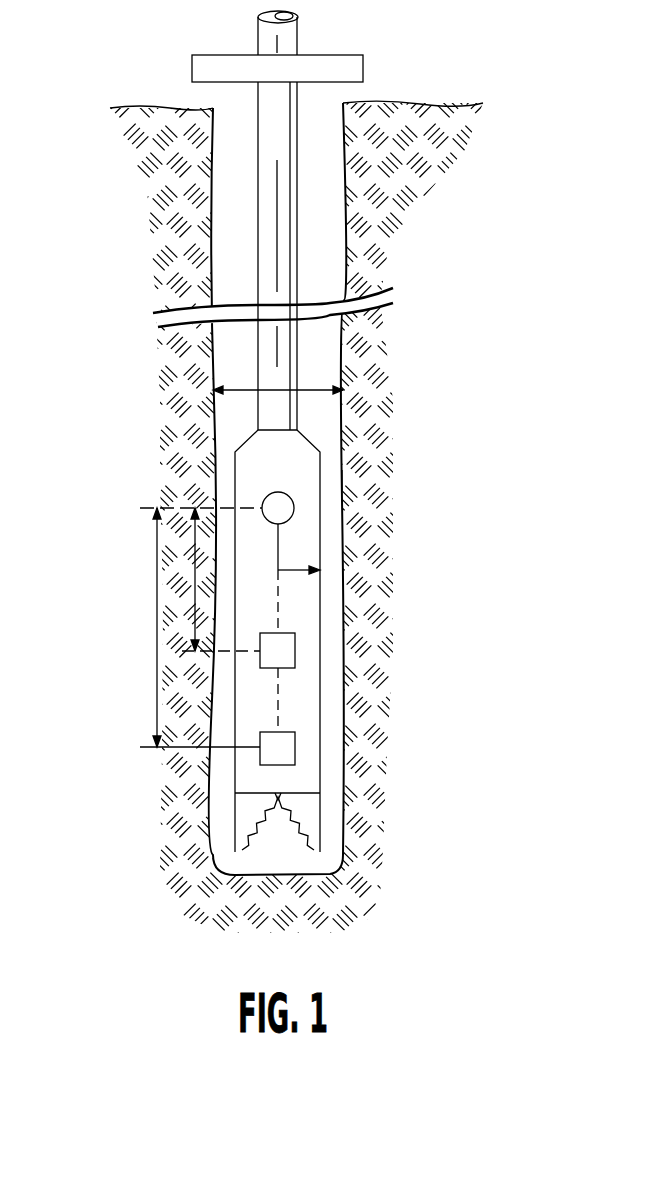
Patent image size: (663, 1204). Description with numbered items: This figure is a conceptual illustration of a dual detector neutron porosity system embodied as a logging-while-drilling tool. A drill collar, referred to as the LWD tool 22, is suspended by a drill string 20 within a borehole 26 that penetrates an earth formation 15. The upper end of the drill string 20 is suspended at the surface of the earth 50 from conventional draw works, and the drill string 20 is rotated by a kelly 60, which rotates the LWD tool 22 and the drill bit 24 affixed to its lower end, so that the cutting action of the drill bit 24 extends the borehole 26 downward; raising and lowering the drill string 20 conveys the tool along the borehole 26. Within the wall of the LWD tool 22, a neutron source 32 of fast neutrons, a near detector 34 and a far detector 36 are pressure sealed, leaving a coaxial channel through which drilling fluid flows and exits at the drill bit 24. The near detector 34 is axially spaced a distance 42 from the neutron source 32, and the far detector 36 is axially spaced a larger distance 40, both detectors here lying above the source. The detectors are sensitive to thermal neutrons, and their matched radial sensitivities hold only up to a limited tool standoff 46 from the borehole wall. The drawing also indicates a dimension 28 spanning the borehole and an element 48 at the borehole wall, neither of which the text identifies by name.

The earth formation 15 is at (155, 488).
The drill string 20 is at (285, 193).
The drill collar 22 is at (310, 533).
The drill bit 24 is at (250, 823).
The borehole 26 is at (240, 235).
The borehole diameter 28 is at (247, 393).
The neutron source 32 is at (290, 493).
The near detector 34 is at (296, 654).
The far detector 36 is at (296, 752).
The distance 40 is at (157, 625).
The distance 42 is at (195, 576).
The tool standoff 46 is at (303, 571).
The borehole wall 48 is at (340, 478).
The surface of the earth 50 is at (137, 108).
The kelly 60 is at (340, 63).